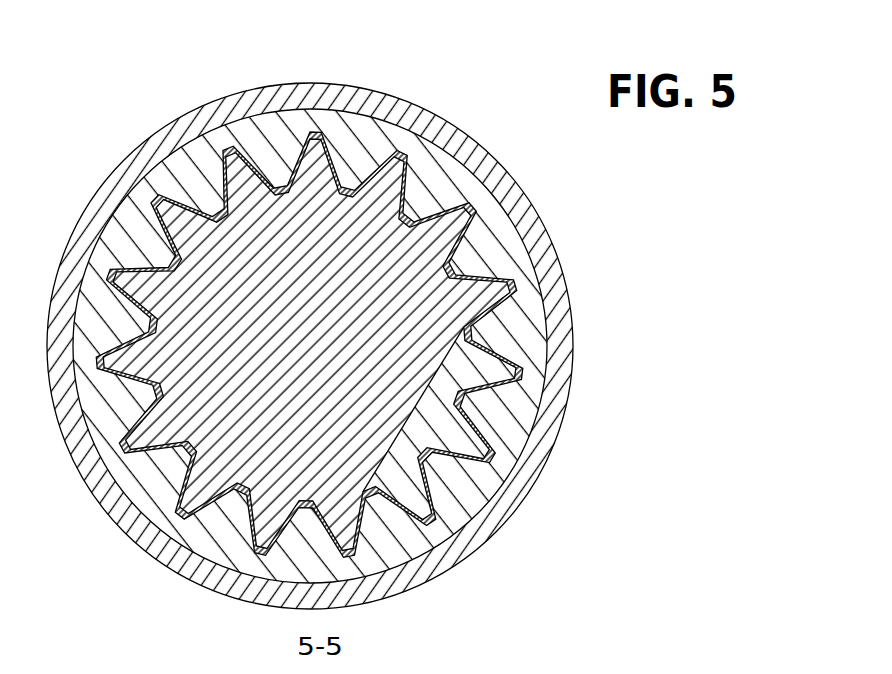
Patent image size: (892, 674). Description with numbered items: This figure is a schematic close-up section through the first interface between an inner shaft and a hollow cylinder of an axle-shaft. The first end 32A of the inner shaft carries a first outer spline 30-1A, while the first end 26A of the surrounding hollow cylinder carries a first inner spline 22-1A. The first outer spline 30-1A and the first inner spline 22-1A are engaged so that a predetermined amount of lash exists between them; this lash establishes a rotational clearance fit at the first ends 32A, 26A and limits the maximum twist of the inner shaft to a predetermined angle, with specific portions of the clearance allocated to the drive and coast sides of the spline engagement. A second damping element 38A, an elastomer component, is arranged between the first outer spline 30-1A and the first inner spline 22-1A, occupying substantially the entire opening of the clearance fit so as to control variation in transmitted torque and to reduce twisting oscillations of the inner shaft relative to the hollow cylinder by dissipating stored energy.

The first end of the hollow cylinder 26A is at (512, 521).
The first inner spline 22-1A is at (437, 187).
The second damping element 38A is at (366, 158).
The first outer spline 30-1A is at (467, 203).
The first end of the inner shaft 32A is at (340, 525).